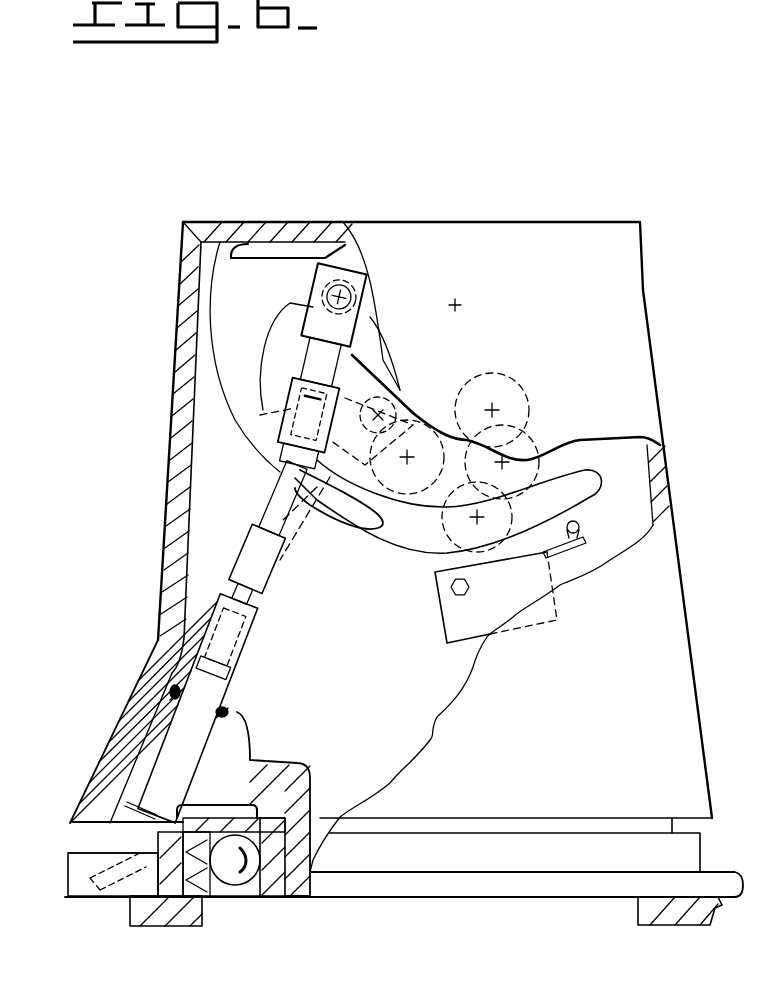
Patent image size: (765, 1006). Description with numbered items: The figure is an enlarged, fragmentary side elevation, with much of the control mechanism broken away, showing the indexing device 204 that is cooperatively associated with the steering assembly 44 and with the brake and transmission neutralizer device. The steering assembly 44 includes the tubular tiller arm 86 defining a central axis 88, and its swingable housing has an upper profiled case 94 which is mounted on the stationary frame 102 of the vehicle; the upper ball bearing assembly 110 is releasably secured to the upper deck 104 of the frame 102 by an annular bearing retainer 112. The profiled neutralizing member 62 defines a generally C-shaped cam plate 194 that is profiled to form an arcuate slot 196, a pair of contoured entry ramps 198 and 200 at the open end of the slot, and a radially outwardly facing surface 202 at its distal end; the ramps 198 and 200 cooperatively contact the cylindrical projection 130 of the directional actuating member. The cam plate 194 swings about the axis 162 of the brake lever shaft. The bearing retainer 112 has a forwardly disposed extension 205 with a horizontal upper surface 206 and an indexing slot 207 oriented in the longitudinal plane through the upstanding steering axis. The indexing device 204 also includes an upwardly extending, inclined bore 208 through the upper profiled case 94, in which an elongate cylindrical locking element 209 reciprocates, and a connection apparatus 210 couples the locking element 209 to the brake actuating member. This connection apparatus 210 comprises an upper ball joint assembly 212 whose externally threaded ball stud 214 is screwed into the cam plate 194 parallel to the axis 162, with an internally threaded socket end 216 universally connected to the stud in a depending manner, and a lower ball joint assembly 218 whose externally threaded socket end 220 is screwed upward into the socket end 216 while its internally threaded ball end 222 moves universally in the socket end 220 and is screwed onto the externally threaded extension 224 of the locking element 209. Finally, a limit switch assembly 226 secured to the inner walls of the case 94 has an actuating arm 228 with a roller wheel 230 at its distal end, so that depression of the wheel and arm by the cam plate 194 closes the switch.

The steering assembly 44 is at (652, 337).
The profiled neutralizing member 62 is at (216, 330).
The tubular tiller arm 86 is at (449, 404).
The central axis 88 is at (402, 445).
The upper profiled case 94 is at (180, 492).
The stationary frame 102 is at (646, 907).
The upper deck 104 is at (170, 922).
The upper ball bearing assembly 110 is at (285, 852).
The annular bearing retainer 112 is at (205, 882).
The cylindrical projection 130 is at (533, 424).
The axis 162 is at (460, 306).
The cam plate 194 is at (270, 294).
The arcuate slot 196 is at (270, 360).
The contoured entry ramp 198 is at (383, 505).
The contoured entry ramp 200 is at (398, 398).
The radially outwardly facing surface 202 is at (348, 528).
The indexing device 204 is at (168, 700).
The forwardly disposed extension 205 is at (84, 820).
The horizontal upper surface 206 is at (90, 853).
The indexing slot 207 is at (82, 888).
The inclined bore 208 is at (145, 757).
The locking element 209 is at (165, 740).
The connection apparatus 210 is at (265, 600).
The upper ball joint assembly 212 is at (355, 318).
The ball stud 214 is at (380, 272).
The socket end 216 is at (290, 392).
The lower ball joint assembly 218 is at (278, 507).
The socket end 220 is at (260, 420).
The ball end 222 is at (247, 572).
The externally threaded extension 224 is at (240, 664).
The limit switch assembly 226 is at (440, 613).
The actuating arm 228 is at (575, 565).
The roller wheel 230 is at (581, 527).